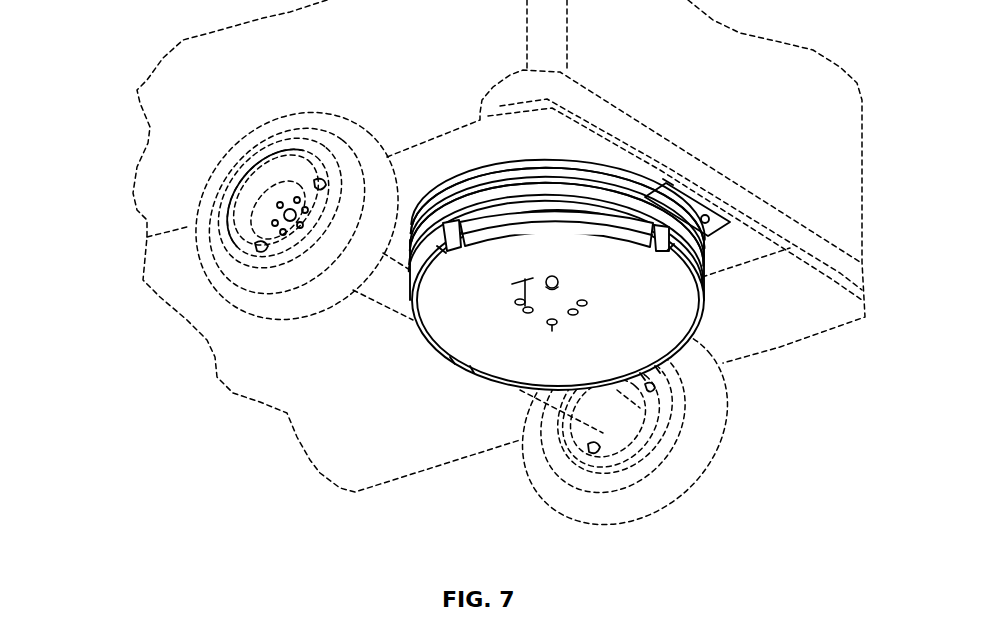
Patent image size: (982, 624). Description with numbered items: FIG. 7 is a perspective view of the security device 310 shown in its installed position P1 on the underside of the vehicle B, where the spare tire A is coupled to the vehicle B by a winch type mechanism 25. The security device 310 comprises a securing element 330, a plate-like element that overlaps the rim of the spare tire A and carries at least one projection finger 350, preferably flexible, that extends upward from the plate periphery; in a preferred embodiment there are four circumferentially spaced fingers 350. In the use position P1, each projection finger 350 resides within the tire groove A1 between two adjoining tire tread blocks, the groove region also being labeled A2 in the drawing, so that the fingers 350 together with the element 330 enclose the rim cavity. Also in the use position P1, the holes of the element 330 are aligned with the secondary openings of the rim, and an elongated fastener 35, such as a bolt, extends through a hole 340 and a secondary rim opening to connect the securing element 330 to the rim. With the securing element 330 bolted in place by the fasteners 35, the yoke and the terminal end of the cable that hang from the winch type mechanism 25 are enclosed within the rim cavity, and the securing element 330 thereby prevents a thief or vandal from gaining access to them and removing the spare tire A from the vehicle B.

The vehicle B is at (448, 157).
The spare tire A is at (471, 180).
The tire groove A1 is at (500, 205).
The second groove A2 is at (540, 208).
The winch type mechanism 25 is at (740, 196).
The projection finger 350 is at (410, 273).
The elongated fastener 35 is at (512, 284).
The hole 340 is at (552, 331).
The securing element 330 is at (667, 322).
The installed position P1 is at (146, 324).
The security device 310 is at (158, 407).